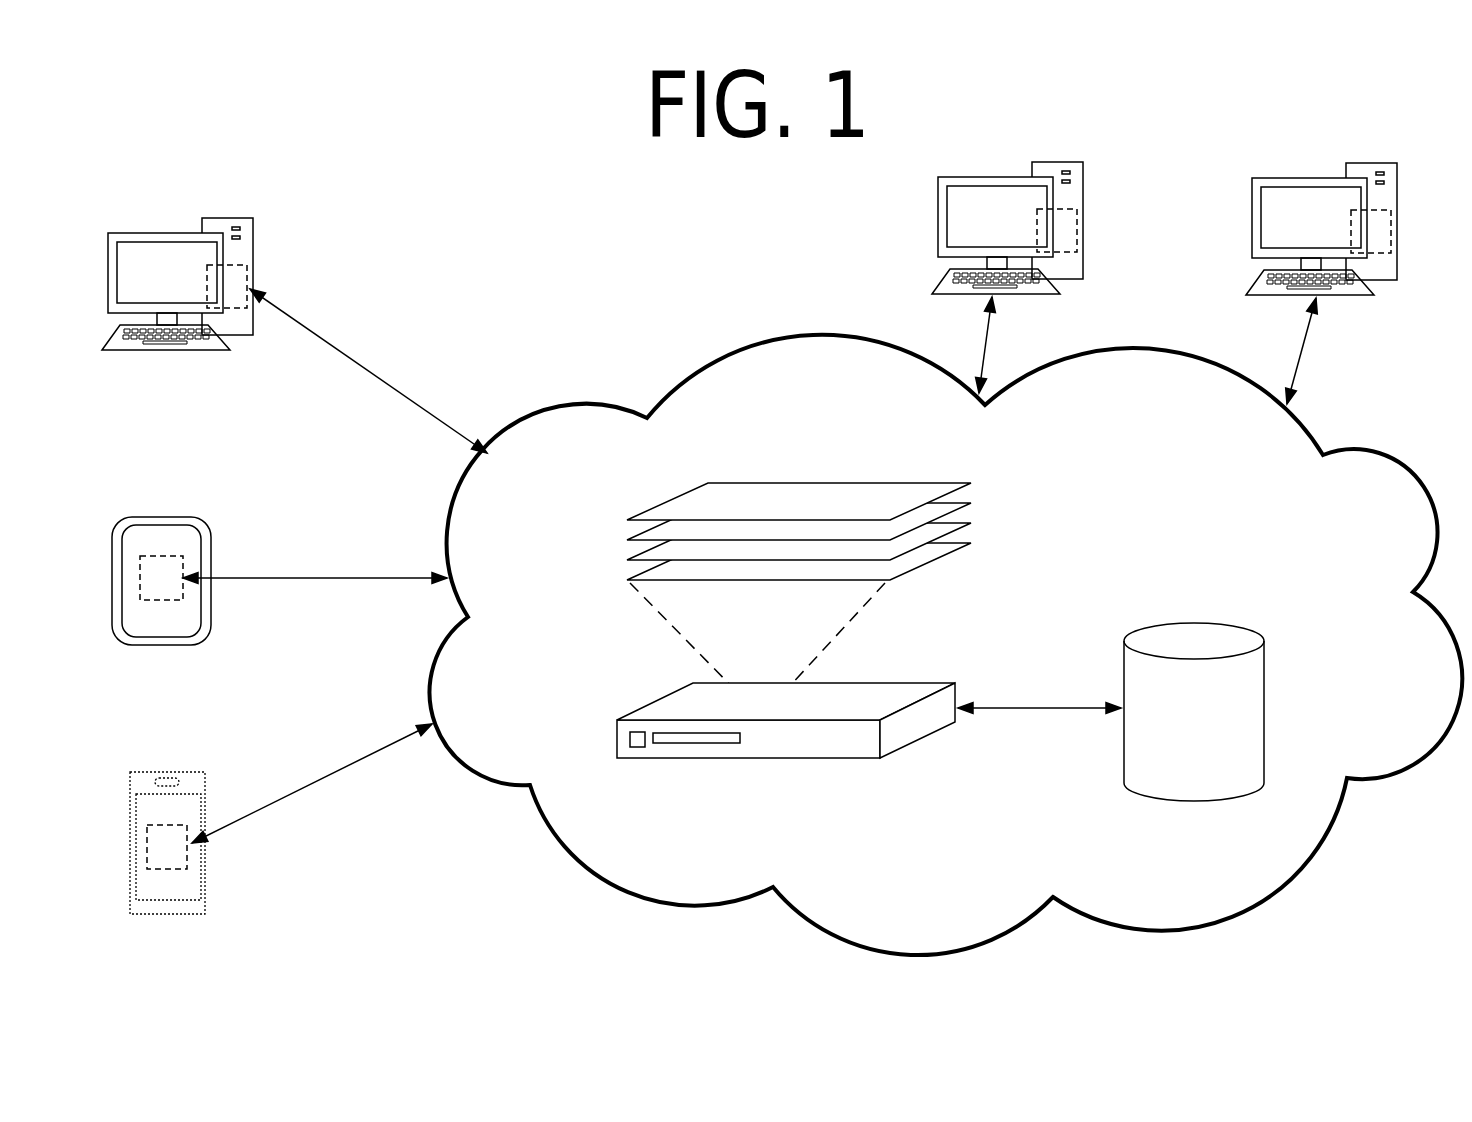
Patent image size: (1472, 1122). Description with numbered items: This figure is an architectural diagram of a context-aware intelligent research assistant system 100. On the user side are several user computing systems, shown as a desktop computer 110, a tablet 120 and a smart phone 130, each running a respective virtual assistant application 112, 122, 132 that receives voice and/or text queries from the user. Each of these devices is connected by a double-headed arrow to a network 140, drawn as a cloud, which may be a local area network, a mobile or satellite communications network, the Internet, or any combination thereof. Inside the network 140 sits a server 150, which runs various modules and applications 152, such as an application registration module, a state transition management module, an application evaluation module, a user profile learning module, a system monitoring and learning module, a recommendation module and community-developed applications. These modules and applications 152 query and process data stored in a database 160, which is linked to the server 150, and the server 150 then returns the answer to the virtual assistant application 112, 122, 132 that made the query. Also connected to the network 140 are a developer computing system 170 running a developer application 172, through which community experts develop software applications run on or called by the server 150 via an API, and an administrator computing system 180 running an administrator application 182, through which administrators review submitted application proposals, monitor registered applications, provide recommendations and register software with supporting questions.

The context-aware intelligent research assistant system 100 is at (220, 177).
The desktop computer 110 is at (252, 230).
The virtual assistant application 112 is at (248, 270).
The tablet 120 is at (171, 517).
The virtual assistant application 122 is at (183, 564).
The smart phone 130 is at (203, 792).
The virtual assistant application 132 is at (191, 863).
The network 140 is at (558, 858).
The server 150 is at (793, 760).
The modules and applications 152 is at (800, 483).
The database 160 is at (1215, 623).
The developer computing system 170 is at (1305, 178).
The developer application 172 is at (1393, 222).
The administrator computing system 180 is at (992, 177).
The administrator application 182 is at (1073, 225).